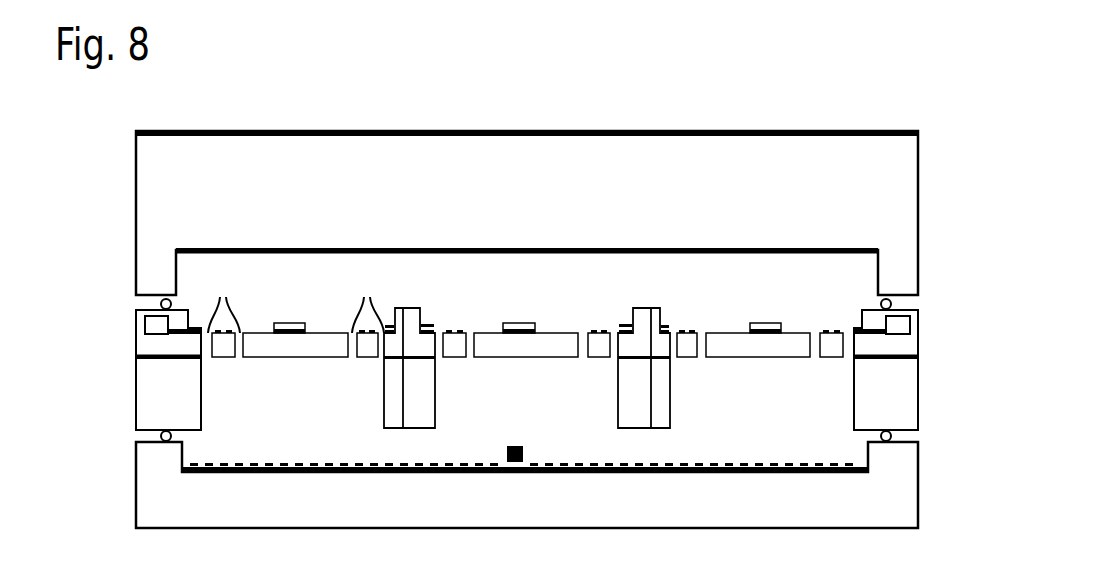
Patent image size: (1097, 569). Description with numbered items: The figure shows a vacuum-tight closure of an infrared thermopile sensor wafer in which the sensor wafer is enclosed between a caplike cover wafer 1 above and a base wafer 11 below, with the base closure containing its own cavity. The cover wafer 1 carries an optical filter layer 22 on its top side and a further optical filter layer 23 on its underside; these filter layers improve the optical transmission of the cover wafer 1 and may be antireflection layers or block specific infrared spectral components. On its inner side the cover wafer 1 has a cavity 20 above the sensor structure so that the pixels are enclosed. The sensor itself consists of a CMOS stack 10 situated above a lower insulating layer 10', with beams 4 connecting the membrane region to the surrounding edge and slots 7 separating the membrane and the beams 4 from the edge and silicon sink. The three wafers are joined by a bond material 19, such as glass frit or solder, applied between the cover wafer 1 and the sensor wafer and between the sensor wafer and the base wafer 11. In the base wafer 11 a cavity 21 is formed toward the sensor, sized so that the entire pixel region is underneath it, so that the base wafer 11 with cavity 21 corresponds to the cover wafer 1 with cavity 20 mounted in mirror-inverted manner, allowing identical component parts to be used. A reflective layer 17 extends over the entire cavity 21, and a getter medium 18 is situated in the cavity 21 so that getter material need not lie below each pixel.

The cover wafer 1 is at (325, 193).
The optical filter layer 22 is at (340, 130).
The cavity 20 is at (733, 263).
The optical filter layer 23 is at (510, 254).
The lower insulating layer 10' is at (135, 370).
The CMOS stack 10 is at (913, 365).
The bond material 19 is at (160, 305).
The base wafer 11 is at (148, 488).
The cavity 21 is at (243, 460).
The reflective metal layer 17 is at (735, 467).
The getter medium 18 is at (525, 452).
The beams 4 is at (365, 360).
The slots 7 is at (296, 297).